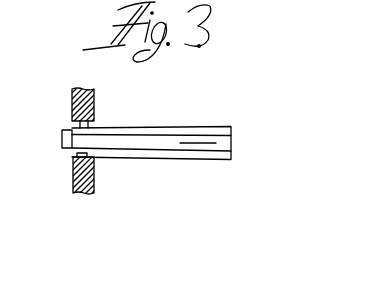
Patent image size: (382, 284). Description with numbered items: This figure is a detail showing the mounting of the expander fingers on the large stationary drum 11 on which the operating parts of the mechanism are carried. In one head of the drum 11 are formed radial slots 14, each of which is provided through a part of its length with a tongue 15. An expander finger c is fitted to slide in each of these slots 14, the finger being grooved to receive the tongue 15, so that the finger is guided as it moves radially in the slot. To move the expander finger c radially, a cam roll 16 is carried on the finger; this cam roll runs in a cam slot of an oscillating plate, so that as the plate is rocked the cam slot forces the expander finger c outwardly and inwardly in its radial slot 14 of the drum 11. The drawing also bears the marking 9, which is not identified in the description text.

The expander finger c is at (150, 130).
The bore of rod 9 is at (228, 178).
The stationary drum 11 is at (123, 86).
The radial slot 14 is at (73, 168).
The tongue 15 is at (95, 128).
The cam roll 16 is at (63, 147).